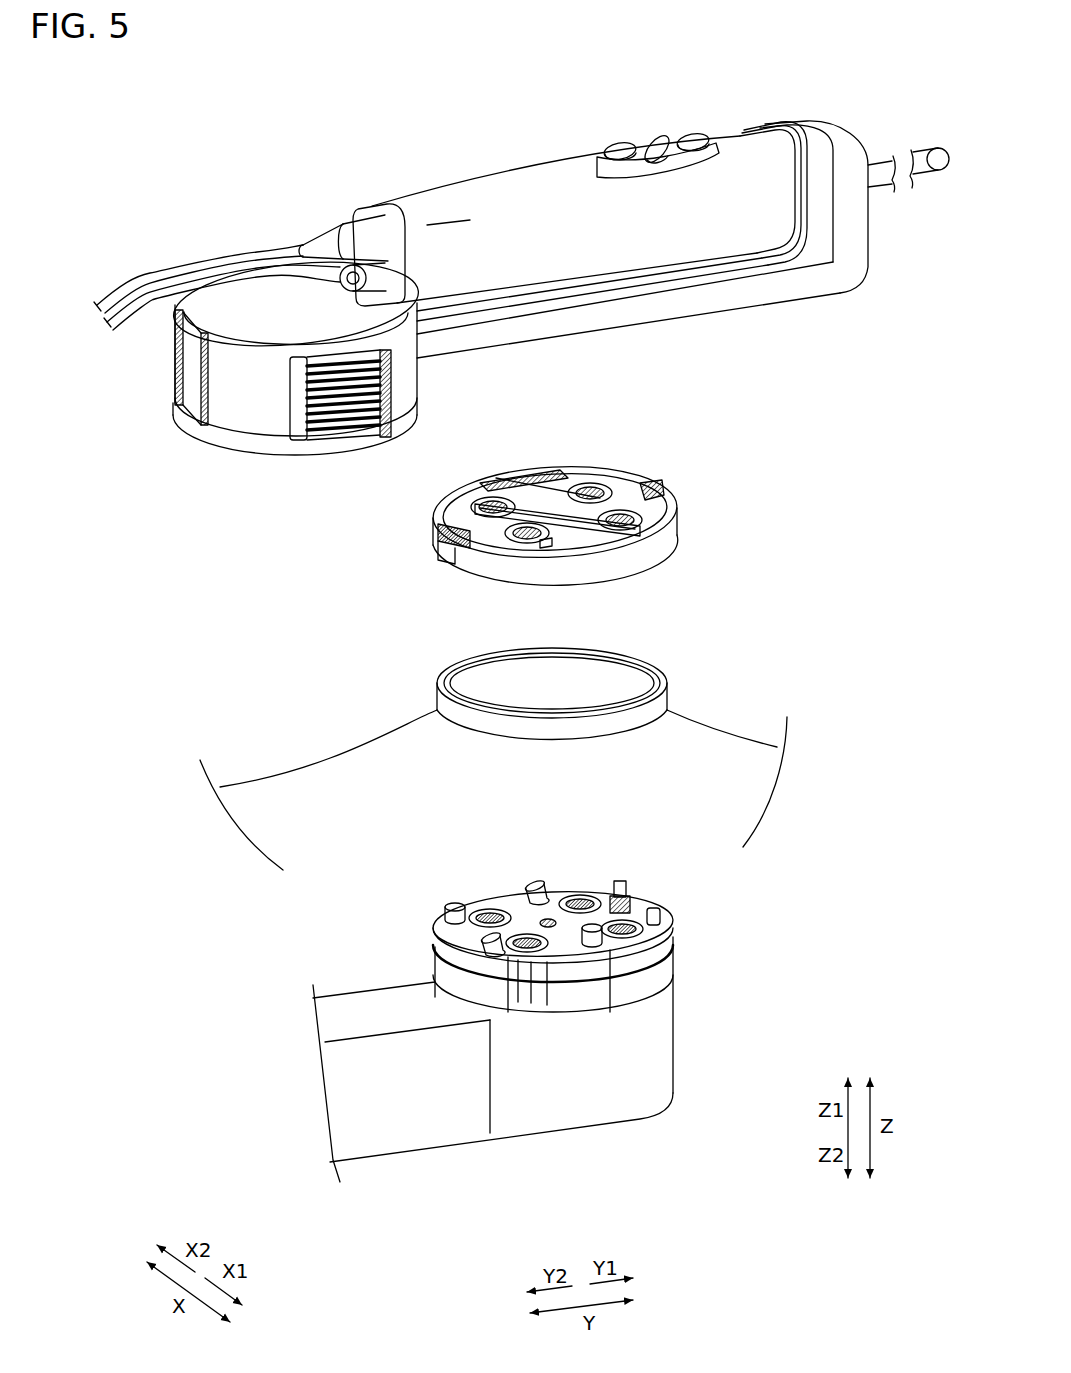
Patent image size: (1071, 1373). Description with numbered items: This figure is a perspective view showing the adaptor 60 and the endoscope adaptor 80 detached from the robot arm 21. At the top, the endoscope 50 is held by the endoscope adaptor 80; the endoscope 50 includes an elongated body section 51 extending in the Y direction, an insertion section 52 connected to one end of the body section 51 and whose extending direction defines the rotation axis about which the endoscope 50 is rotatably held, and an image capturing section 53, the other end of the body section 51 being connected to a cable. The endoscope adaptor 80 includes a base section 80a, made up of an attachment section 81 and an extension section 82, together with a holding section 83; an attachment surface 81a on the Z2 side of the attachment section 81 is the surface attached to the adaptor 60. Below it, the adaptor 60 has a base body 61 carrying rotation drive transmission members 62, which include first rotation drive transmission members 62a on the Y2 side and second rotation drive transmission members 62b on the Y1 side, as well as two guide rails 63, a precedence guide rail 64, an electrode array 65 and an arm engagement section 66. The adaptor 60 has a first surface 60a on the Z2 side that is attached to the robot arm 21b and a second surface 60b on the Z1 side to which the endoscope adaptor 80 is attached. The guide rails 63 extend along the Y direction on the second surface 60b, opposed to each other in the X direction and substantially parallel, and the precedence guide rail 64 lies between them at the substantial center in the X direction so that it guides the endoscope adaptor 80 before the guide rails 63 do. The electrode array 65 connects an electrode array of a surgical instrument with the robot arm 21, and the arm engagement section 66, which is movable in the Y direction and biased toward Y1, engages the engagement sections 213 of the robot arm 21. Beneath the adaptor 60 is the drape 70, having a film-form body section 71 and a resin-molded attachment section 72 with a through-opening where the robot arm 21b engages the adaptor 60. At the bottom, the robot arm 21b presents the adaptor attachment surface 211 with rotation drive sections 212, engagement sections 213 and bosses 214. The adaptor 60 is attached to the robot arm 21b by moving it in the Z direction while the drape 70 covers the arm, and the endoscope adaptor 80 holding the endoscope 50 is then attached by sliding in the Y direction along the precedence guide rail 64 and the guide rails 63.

The endoscope 50 is at (575, 125).
The body section 51 is at (528, 175).
The insertion section 52 is at (880, 163).
The image capturing section 53 is at (927, 153).
The endoscope adaptor 80 is at (720, 325).
The base section 80a is at (448, 372).
The attachment section 81 is at (265, 452).
The attachment surface 81a is at (318, 460).
The extension section 82 is at (655, 325).
The holding section 83 is at (853, 260).
The adaptor 60 is at (700, 503).
The first surface 60a is at (625, 585).
The second surface 60b is at (570, 490).
The base body 61 is at (677, 532).
The rotation drive transmission members 62 is at (579, 462).
The first rotation drive transmission members 62a is at (525, 505).
The second rotation drive transmission members 62b is at (632, 510).
The guide rails 63 is at (520, 500).
The precedence guide rail 64 is at (548, 510).
The electrode array 65 is at (440, 535).
The arm engagement section 66 is at (660, 490).
The drape 70 is at (750, 698).
The body section 71 is at (712, 722).
The attachment section 72 is at (447, 690).
The robot arm 21 is at (713, 950).
The robot arm 21b is at (493, 1035).
The adaptor attachment surface 211 is at (510, 900).
The rotation drive sections 212 is at (490, 915).
The engagement sections 213 is at (455, 905).
The bosses 214 is at (617, 880).